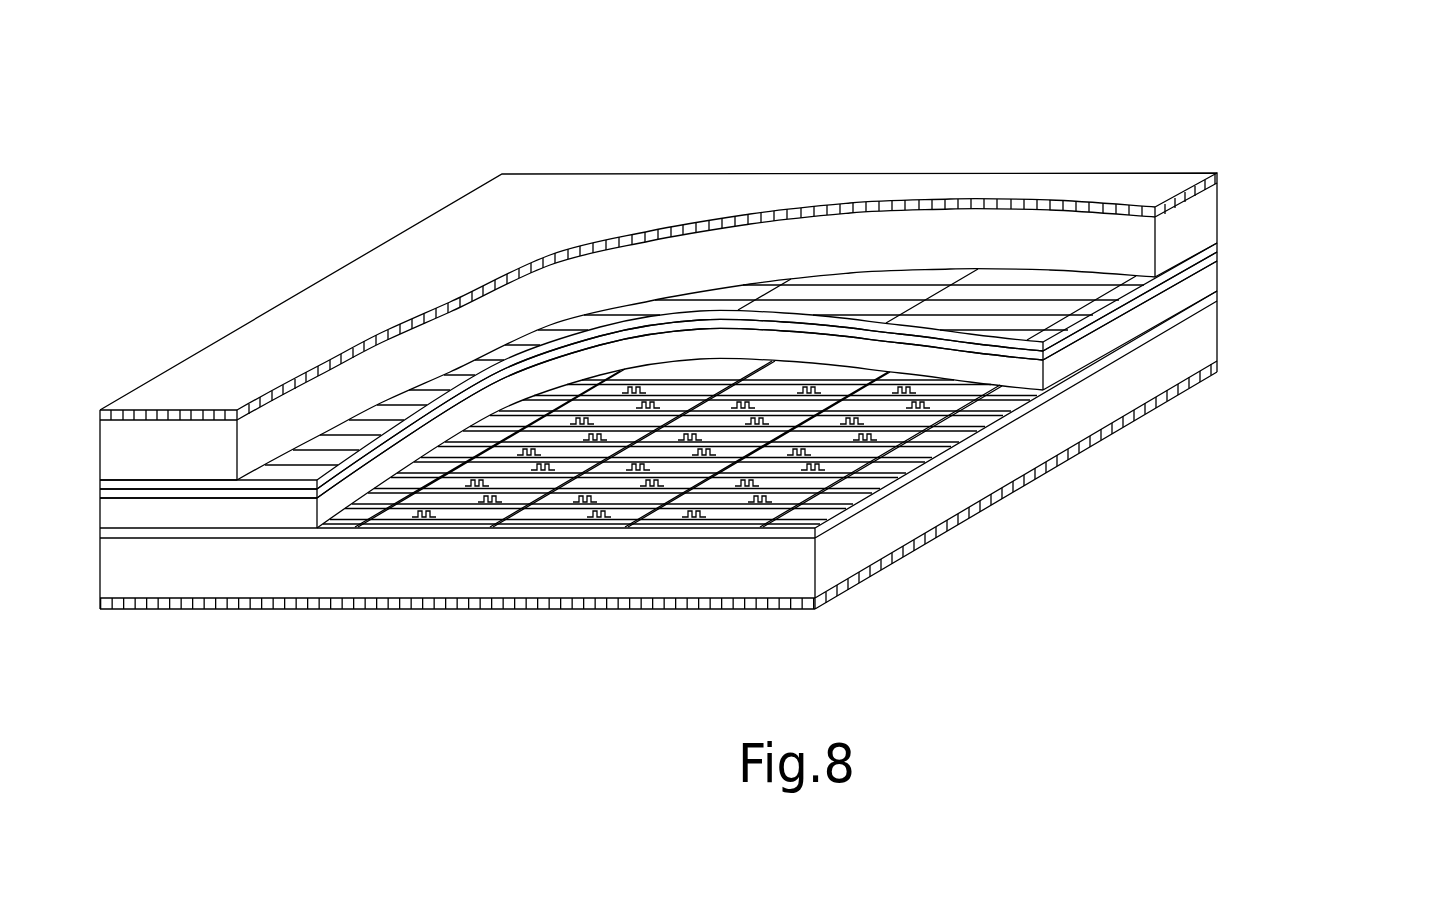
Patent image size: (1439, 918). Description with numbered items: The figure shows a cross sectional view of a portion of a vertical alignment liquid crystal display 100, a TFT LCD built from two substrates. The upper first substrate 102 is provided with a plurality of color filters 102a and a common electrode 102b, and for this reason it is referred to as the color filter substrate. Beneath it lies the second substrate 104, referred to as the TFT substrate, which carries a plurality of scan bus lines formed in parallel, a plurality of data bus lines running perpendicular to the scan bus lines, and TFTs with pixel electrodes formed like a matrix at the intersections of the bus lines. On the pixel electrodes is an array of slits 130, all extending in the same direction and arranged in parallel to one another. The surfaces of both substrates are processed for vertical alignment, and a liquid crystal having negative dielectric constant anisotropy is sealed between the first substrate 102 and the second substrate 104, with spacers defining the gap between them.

The touch sensor device 100 is at (220, 165).
The first substrate 102 is at (1210, 218).
The color filters 102a is at (1210, 247).
The common electrode 102b is at (1210, 260).
The slits 130 is at (1210, 282).
The second substrate 104 is at (1180, 347).